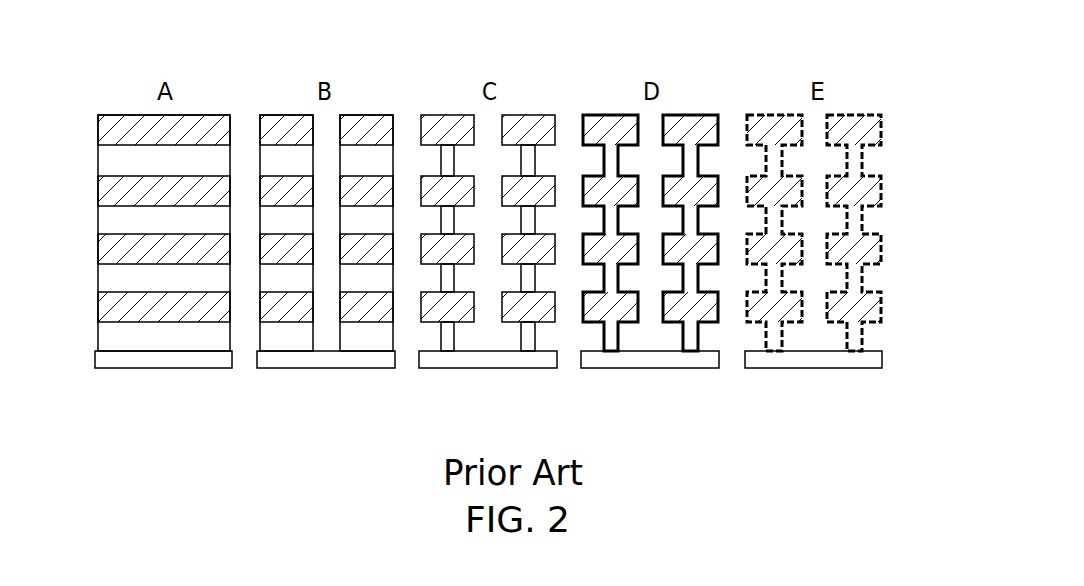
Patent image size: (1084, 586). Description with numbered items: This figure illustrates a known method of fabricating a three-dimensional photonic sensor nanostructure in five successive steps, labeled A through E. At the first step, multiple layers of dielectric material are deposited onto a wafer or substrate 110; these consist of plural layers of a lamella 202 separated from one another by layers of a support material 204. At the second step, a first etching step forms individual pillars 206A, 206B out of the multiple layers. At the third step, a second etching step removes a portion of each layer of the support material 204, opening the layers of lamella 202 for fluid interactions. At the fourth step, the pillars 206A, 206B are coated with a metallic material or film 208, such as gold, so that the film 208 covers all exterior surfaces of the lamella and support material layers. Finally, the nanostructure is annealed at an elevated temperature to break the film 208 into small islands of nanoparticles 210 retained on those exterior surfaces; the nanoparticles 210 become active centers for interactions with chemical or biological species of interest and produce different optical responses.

The substrate 110 is at (163, 368).
The lamella 202 is at (97, 297).
The support material 204 is at (95, 337).
The pillar 206A is at (283, 103).
The pillar 206B is at (370, 103).
The metallic film 208 is at (608, 112).
The nanoparticles 210 is at (882, 127).